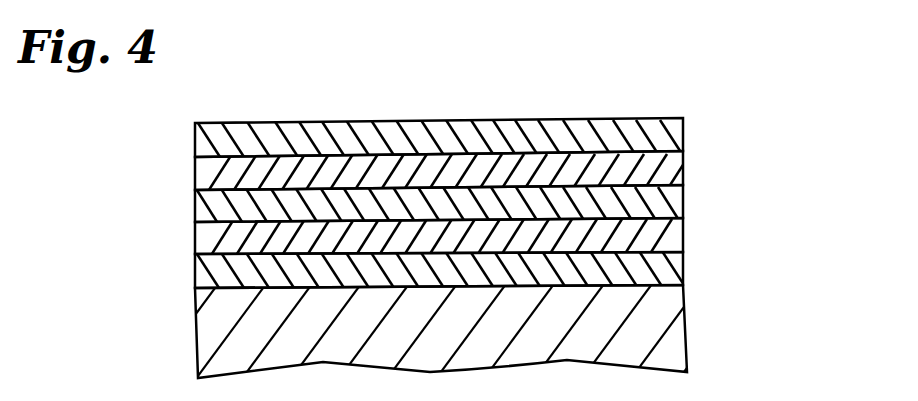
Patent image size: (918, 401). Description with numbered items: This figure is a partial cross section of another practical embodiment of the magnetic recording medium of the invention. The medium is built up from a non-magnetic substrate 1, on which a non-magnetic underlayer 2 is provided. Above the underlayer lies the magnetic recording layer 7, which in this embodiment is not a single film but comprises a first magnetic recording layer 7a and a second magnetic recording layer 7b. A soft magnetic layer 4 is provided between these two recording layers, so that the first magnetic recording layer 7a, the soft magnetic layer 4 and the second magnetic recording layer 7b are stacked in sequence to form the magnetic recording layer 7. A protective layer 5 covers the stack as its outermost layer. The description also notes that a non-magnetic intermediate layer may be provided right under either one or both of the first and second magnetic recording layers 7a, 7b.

The non-magnetic substrate 1 is at (683, 298).
The non-magnetic underlayer 2 is at (683, 264).
The soft magnetic layer 4 is at (201, 210).
The protective layer 5 is at (683, 132).
The magnetic recording layer 7 is at (499, 204).
The first magnetic recording layer 7a is at (683, 235).
The second magnetic recording layer 7b is at (683, 168).